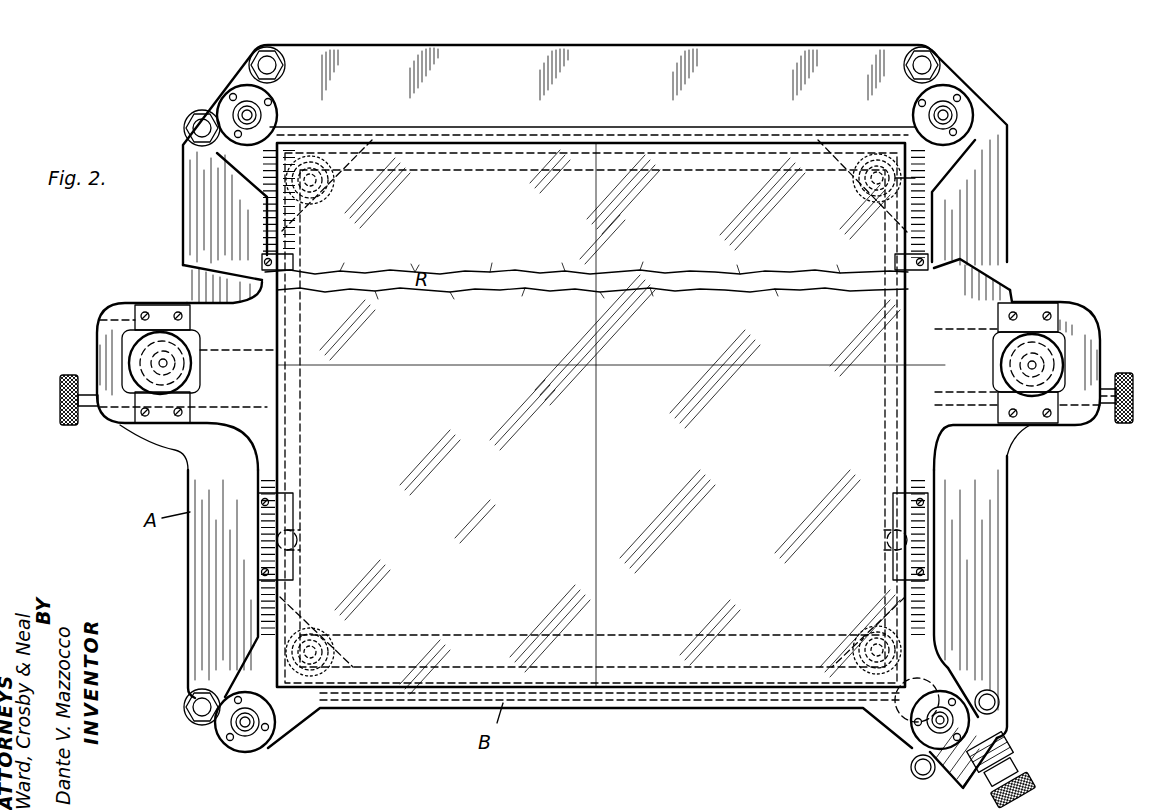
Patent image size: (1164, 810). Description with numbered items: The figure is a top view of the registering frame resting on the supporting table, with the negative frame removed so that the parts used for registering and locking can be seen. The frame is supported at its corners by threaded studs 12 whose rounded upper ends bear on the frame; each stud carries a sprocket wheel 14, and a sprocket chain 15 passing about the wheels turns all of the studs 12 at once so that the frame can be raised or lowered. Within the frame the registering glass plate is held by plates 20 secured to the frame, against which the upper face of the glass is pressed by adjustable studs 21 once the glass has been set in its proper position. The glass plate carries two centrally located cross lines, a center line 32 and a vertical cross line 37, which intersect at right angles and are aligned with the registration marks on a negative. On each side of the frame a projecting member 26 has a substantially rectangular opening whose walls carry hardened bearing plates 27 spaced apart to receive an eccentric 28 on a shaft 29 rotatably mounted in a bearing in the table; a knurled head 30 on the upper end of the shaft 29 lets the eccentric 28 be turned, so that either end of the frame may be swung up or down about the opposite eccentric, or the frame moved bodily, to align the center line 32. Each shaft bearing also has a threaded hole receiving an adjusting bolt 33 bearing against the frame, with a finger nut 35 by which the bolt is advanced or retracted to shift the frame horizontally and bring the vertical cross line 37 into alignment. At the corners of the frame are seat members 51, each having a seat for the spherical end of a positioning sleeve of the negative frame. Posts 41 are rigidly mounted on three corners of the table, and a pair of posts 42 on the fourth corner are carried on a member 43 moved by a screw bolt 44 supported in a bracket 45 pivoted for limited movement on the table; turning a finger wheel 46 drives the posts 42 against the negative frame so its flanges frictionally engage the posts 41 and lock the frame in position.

The threaded studs 12 is at (318, 700).
The sprocket wheel 14 is at (290, 640).
The sprocket chain 15 is at (402, 688).
The plates 20 is at (262, 262).
The adjustable studs 21 is at (285, 545).
The projecting members 26 is at (127, 312).
The hardened bearing plates 27 is at (160, 307).
The eccentric 28 is at (193, 357).
The shaft 29 is at (108, 337).
The knurled head 30 is at (1058, 365).
The center line 32 is at (705, 366).
The adjusting bolt 33 is at (93, 410).
The finger nut 35 is at (60, 402).
The vertical cross line 37 is at (598, 452).
The posts 41 is at (272, 51).
The posts 42 is at (999, 700).
The member 43 is at (943, 778).
The screw bolt 44 is at (1000, 747).
The bracket 45 is at (1013, 760).
The finger wheel 46 is at (1035, 778).
The seat member 51 is at (246, 108).